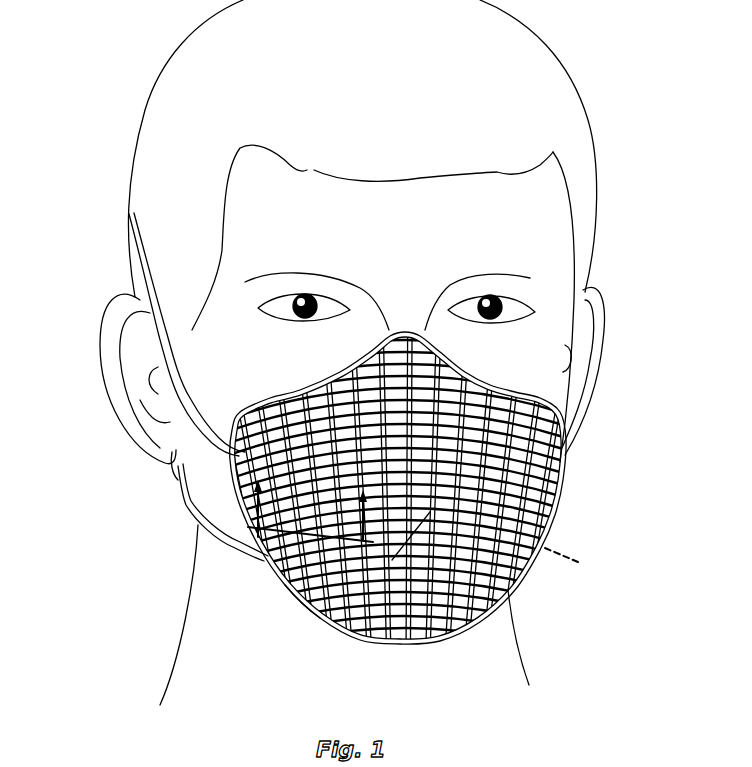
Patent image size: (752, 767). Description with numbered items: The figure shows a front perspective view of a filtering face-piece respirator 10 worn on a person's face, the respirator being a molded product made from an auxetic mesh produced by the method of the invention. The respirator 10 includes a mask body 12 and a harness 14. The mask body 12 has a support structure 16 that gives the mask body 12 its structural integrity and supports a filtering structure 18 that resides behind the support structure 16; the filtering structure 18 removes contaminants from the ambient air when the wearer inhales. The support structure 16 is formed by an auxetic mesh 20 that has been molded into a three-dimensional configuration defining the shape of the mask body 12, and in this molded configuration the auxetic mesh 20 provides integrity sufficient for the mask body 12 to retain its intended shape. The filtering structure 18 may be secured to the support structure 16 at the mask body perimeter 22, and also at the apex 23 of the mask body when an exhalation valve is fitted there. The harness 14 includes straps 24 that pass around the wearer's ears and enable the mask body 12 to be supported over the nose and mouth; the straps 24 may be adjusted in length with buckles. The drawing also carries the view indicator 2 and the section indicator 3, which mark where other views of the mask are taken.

The filtering face-piece respirator 10 is at (431, 507).
The mask body 12 is at (530, 590).
The harness 14 is at (163, 489).
The support structure 16 is at (421, 507).
The filtering structure 18 is at (467, 602).
The auxetic mesh 20 is at (392, 607).
The mask body perimeter 22 is at (283, 600).
The apex 23 is at (392, 560).
The straps 24 is at (130, 243).
The section view 2 is at (571, 564).
The section line 3- 3 is at (312, 494).